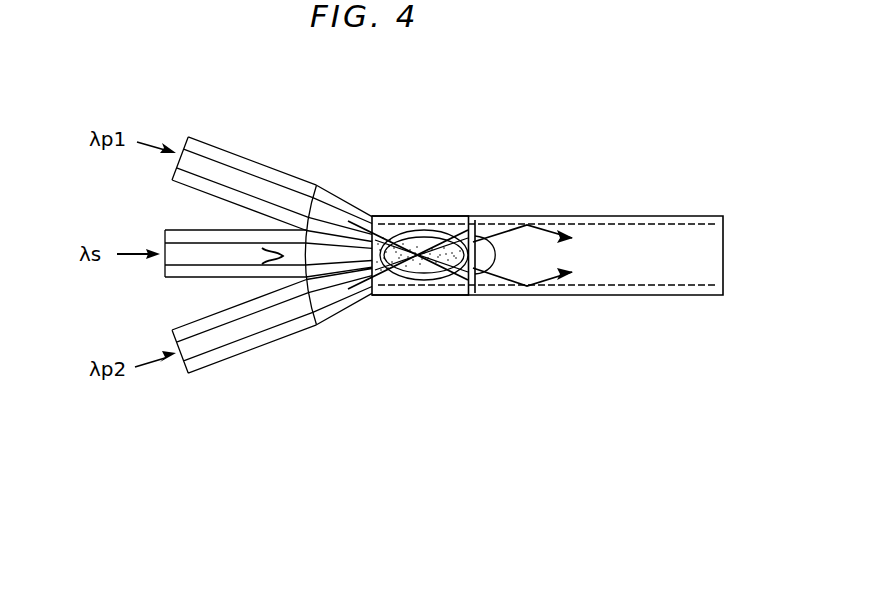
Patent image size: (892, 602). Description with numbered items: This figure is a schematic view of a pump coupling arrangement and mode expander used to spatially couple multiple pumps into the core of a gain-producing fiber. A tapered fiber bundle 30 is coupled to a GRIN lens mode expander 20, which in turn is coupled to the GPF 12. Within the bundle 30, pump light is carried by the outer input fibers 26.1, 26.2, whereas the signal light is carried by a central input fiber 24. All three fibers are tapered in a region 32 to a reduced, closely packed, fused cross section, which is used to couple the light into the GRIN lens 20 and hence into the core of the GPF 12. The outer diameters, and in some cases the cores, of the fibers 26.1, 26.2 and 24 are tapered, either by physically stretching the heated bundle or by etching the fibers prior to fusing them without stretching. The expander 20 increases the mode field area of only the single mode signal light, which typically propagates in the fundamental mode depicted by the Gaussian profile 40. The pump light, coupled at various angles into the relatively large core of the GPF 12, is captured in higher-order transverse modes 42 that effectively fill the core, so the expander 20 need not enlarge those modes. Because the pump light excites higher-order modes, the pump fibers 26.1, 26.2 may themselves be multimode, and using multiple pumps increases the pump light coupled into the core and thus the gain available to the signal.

The GPF 12 is at (600, 214).
The GRIN lens mode expander 20 is at (418, 215).
The central input fiber 24 is at (176, 279).
The outer input fiber 26.1 is at (281, 169).
The outer input fiber 26.2 is at (255, 348).
The tapered fiber bundle 30 is at (251, 121).
The tapered region 32 is at (336, 312).
The Gaussian profile 40 is at (480, 240).
The higher-order transverse modes 42 is at (512, 284).